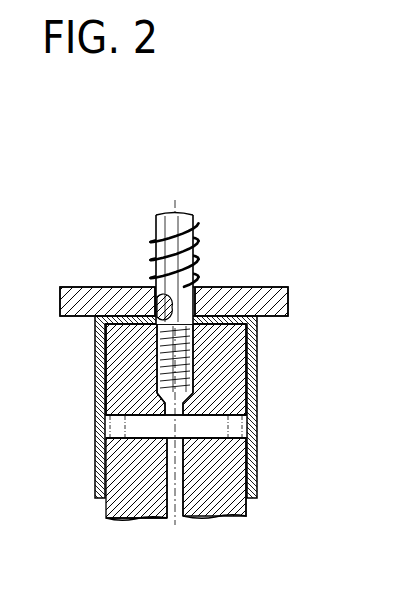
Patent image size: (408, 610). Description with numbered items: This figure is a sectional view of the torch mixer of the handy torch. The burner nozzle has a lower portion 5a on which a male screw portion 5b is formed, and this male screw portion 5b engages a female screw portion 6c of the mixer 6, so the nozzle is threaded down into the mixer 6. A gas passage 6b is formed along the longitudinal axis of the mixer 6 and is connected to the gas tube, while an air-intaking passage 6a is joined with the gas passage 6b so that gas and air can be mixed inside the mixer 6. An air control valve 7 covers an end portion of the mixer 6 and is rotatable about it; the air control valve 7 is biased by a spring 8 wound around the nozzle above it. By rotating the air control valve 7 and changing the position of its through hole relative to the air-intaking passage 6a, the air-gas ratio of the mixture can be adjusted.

The lower portion of the nozzle 5a is at (169, 215).
The male screw portion 5b is at (198, 345).
The mixer 6 is at (227, 512).
The air-intaking passage 6a is at (118, 428).
The gas passage 6b is at (174, 512).
The female screw portion 6c is at (198, 392).
The air control valve 7 is at (95, 346).
The spring 8 is at (198, 242).